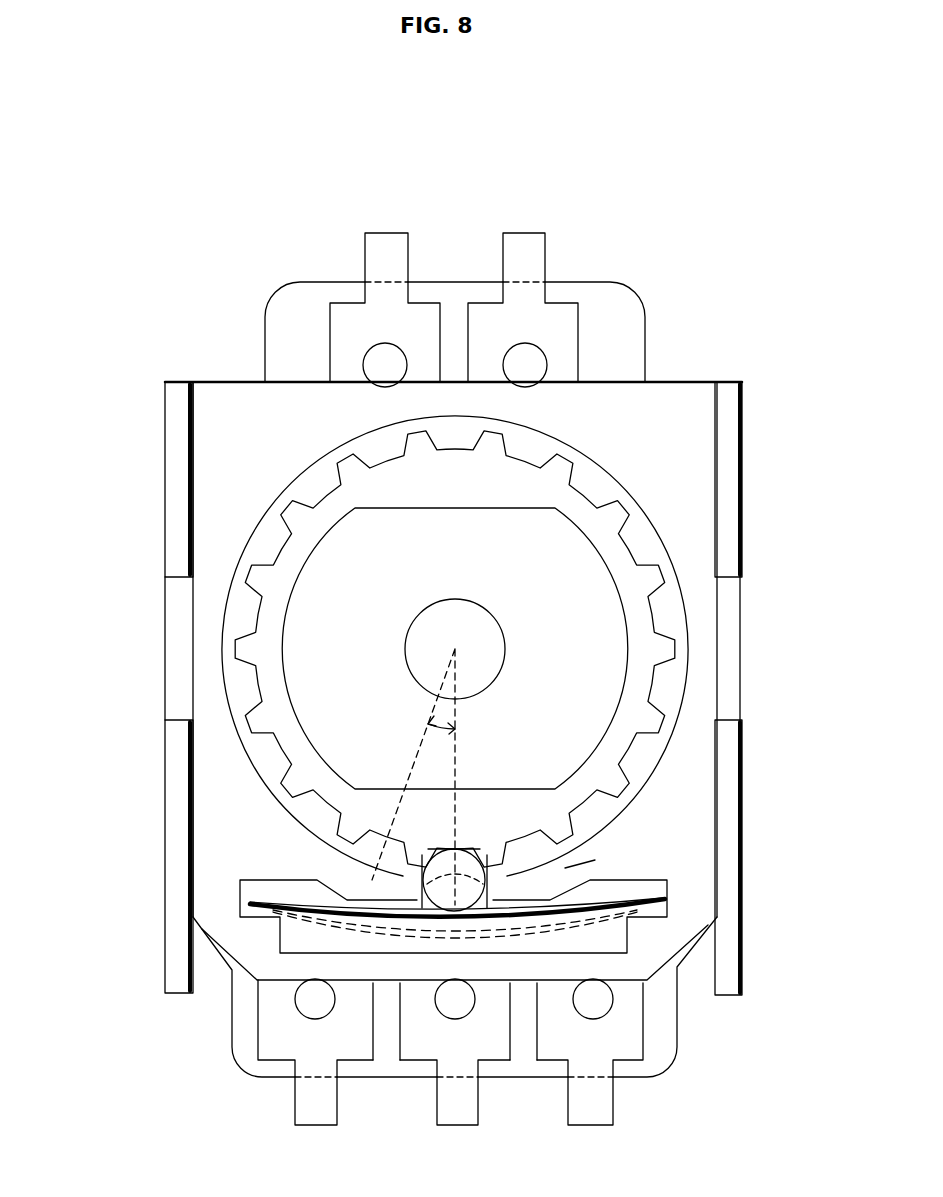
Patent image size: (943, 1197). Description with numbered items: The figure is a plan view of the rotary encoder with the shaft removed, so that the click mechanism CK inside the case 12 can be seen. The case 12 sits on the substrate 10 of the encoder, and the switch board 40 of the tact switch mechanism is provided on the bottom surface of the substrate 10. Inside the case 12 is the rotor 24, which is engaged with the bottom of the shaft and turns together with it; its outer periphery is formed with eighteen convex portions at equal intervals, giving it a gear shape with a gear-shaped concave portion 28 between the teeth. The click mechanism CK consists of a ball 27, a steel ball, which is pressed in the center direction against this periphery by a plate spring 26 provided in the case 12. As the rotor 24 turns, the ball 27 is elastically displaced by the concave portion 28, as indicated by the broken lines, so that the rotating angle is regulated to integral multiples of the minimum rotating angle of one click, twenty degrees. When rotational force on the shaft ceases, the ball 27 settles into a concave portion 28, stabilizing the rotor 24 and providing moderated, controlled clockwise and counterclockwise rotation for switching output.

The substrate 10 is at (677, 1040).
The case 12 is at (217, 397).
The rotor 24 is at (265, 623).
The plate spring 26 is at (668, 897).
The ball 27 is at (418, 876).
The gear-shaped concave portion 28 is at (312, 806).
The switch board 40 is at (643, 300).
The click mechanism CK is at (565, 868).